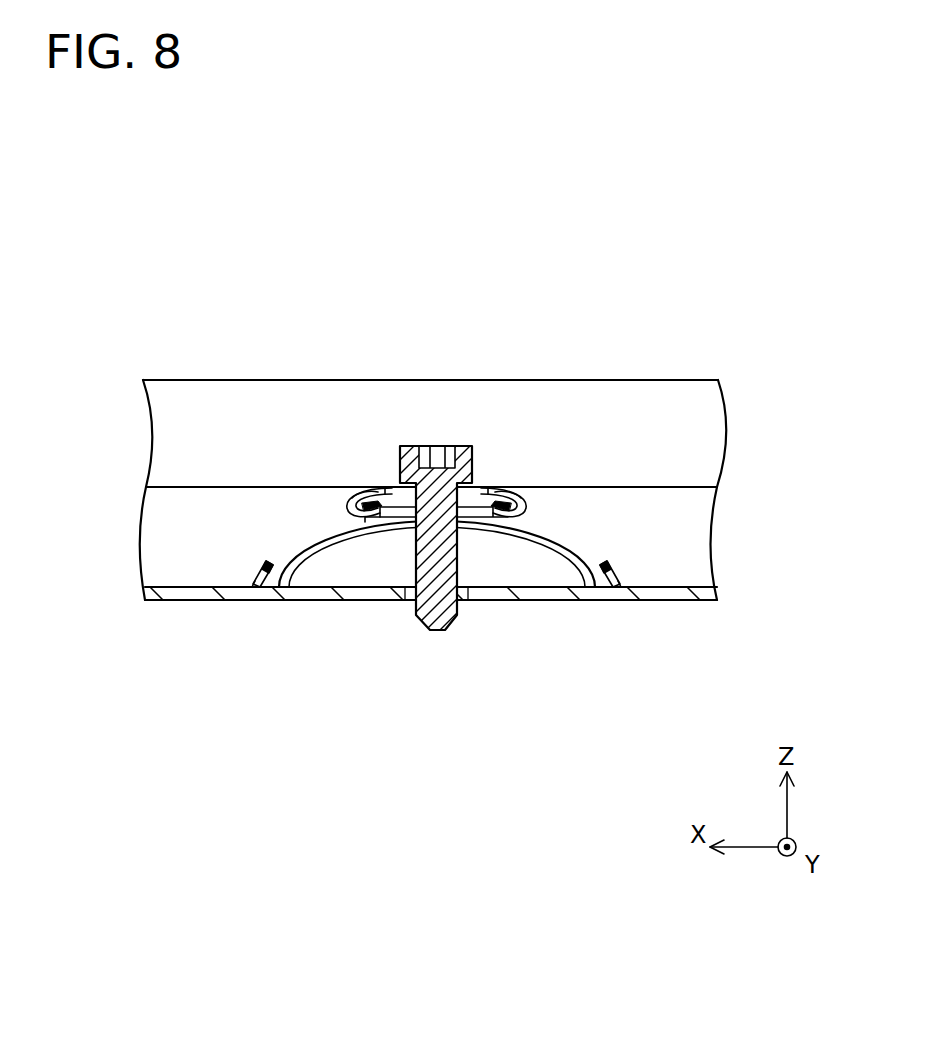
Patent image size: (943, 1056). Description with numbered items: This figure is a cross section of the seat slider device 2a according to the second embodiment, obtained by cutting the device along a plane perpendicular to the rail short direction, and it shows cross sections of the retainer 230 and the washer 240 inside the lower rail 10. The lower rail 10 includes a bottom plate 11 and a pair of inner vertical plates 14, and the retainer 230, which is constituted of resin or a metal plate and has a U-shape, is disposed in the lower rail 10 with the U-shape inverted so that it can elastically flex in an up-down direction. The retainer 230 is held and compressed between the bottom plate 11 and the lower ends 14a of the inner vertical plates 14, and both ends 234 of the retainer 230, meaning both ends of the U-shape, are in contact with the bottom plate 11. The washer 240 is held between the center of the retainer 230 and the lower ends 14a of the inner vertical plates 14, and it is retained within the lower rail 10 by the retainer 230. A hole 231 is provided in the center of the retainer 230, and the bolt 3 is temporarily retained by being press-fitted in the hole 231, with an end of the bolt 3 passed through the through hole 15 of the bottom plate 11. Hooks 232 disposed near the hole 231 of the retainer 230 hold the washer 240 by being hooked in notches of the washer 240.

The seat slider device 2a is at (102, 288).
The lower rail 10 is at (732, 370).
The inner vertical plates 14 is at (718, 435).
The lower ends of the inner vertical plates 14a is at (672, 490).
The bottom plate 11 is at (670, 601).
The through hole 15 is at (410, 600).
The bolt 3 is at (445, 628).
The retainer 230 is at (552, 538).
The hole 231 is at (415, 528).
The hooks 232 is at (348, 507).
The both ends of the retainer 234 is at (260, 601).
The washer 240 is at (378, 492).